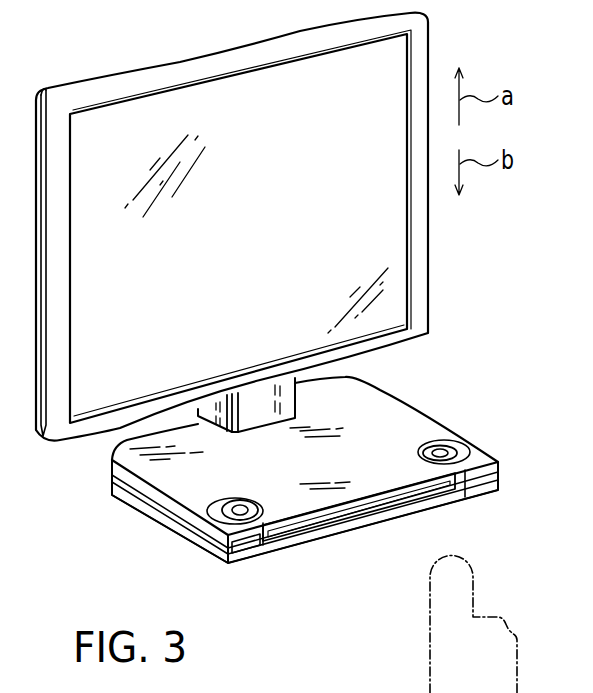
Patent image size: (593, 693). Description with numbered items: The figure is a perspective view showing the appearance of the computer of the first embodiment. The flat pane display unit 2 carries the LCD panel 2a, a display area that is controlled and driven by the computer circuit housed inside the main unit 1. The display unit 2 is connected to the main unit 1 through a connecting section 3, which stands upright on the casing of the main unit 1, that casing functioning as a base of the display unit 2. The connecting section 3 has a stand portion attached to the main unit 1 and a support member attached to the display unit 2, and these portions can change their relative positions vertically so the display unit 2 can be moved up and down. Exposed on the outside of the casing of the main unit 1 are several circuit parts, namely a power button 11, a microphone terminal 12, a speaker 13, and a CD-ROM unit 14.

The main unit 1 is at (313, 476).
The display unit 2 is at (442, 262).
The LCD panel 2a is at (374, 76).
The connecting section 3 is at (298, 402).
The power button 11 is at (149, 512).
The microphone terminal 12 is at (183, 527).
The speaker 13 is at (243, 502).
The CD-ROM unit 14 is at (382, 498).